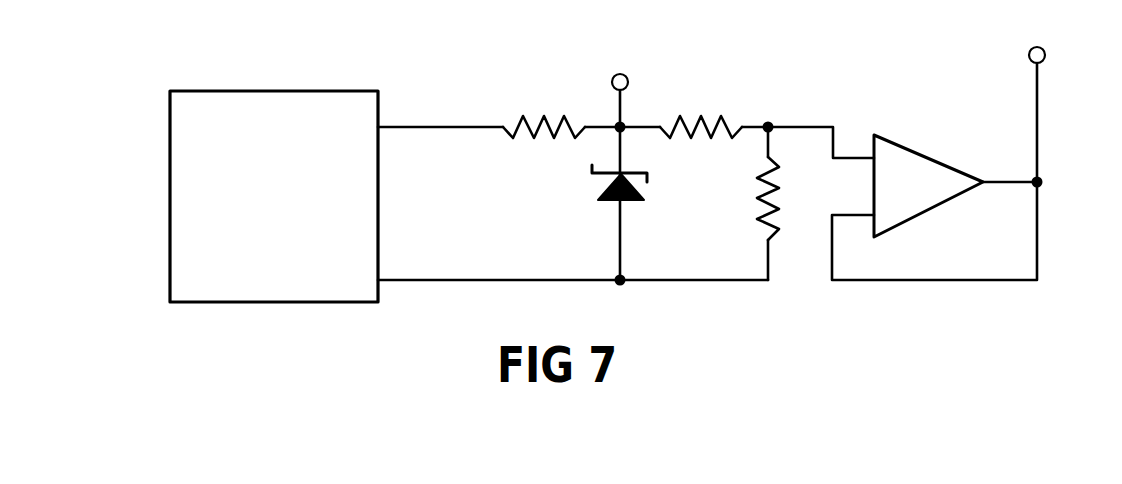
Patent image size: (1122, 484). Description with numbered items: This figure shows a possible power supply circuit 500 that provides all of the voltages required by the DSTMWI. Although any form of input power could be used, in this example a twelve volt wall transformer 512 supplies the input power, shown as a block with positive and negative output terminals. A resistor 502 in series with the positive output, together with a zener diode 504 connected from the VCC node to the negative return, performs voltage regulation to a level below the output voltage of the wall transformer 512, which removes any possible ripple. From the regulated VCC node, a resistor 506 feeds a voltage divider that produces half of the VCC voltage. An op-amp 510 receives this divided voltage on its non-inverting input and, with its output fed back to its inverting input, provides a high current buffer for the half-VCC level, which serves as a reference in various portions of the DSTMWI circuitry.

The power supply circuit 500 is at (741, 50).
The resistor 502 is at (544, 105).
The zener diode 504 is at (647, 186).
The resistor 506 is at (701, 105).
The op-amp 510 is at (928, 176).
The wall transformer 512 is at (276, 165).